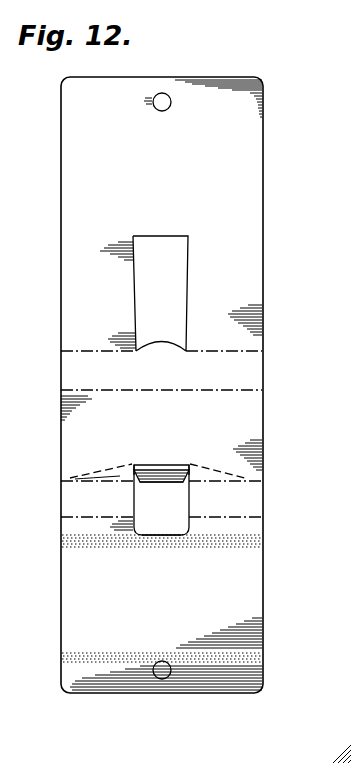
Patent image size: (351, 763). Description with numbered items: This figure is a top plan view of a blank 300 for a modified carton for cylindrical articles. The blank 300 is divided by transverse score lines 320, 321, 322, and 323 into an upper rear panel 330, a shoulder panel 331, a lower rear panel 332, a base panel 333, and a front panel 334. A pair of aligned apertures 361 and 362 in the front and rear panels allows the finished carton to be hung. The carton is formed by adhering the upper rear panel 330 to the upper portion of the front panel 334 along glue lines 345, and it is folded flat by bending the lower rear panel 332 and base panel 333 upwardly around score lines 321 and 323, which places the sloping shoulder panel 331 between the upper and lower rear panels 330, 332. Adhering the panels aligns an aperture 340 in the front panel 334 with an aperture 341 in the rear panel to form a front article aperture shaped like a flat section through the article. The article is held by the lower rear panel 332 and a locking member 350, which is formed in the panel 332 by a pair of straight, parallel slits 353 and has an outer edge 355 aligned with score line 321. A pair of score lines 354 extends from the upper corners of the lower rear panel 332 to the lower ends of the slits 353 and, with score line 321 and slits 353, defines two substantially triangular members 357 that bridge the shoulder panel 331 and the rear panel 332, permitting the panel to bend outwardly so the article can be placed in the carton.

The blank 300 is at (168, 385).
The transverse score line 320 is at (87, 517).
The transverse score line 321 is at (70, 481).
The transverse score line 322 is at (133, 390).
The transverse score line 323 is at (90, 343).
The upper rear panel 330 is at (175, 623).
The shoulder panel 331 is at (103, 509).
The lower rear panel 332 is at (170, 445).
The base panel 333 is at (185, 382).
The front panel 334 is at (173, 214).
The aperture 340 is at (188, 254).
The aperture 341 is at (191, 528).
The glue lines 345 is at (65, 538).
The locking member 350 is at (178, 478).
The slits 353 is at (134, 463).
The score lines 354 is at (98, 462).
The outer edge 355 is at (188, 484).
The triangular members 357 is at (80, 477).
The aperture 361 is at (165, 93).
The aperture 362 is at (163, 679).